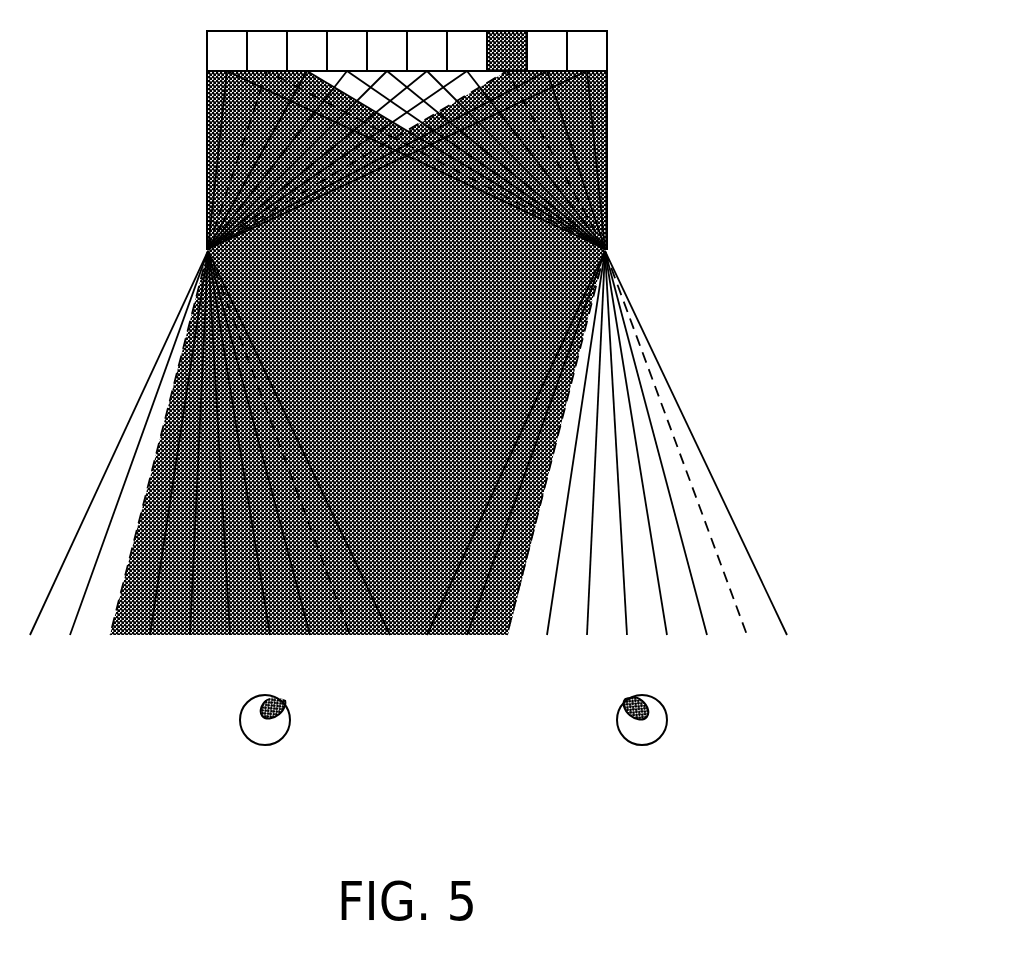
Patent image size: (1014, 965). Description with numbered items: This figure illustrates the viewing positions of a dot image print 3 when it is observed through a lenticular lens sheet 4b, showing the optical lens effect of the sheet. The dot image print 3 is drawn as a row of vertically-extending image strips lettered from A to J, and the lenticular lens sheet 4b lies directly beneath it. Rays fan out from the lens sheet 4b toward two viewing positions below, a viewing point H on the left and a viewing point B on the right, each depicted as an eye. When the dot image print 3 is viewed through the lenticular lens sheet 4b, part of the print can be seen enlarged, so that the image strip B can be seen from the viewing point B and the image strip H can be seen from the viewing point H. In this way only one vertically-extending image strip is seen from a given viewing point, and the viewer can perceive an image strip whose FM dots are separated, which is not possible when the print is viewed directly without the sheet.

The dot image print 3 is at (607, 42).
The lenticular lens sheet 4b is at (607, 128).
The viewing point H is at (258, 738).
The viewing point B is at (648, 739).